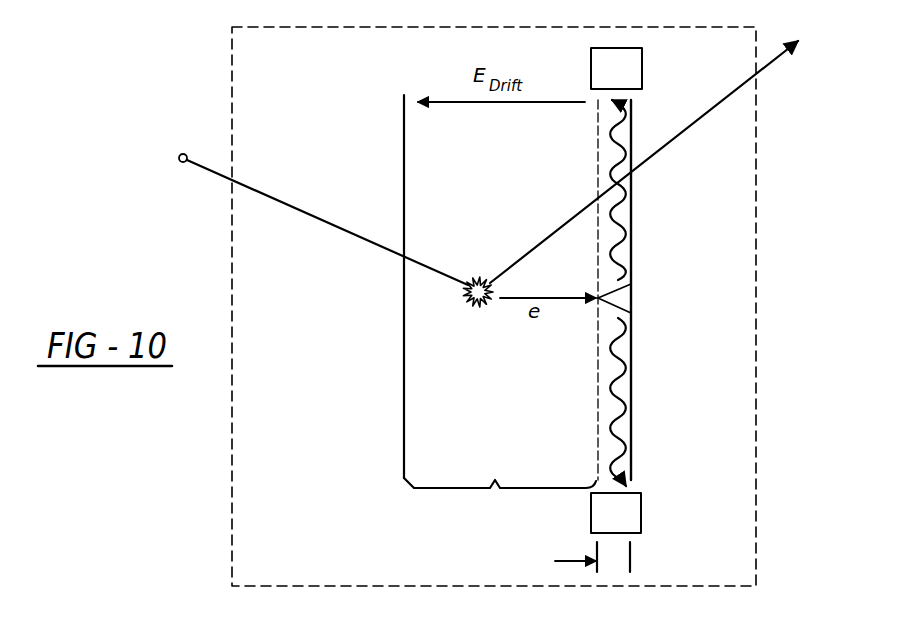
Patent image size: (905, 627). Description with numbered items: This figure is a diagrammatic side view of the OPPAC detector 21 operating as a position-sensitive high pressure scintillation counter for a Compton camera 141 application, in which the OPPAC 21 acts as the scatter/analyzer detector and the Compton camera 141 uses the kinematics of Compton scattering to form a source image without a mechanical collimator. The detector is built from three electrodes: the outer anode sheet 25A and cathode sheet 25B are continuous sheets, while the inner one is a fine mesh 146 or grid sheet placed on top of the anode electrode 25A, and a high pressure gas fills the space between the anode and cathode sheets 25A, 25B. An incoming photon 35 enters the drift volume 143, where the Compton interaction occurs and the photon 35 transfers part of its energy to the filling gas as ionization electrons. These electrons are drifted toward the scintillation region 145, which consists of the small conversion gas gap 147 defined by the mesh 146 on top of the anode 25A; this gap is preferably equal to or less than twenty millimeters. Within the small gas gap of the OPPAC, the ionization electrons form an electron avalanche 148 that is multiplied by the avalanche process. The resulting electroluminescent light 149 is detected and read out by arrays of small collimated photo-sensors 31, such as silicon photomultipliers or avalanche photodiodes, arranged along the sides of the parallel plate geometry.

The OPPAC detector 21 is at (334, 448).
The anode electrode 25A is at (631, 380).
The cathode sheet 25B is at (404, 184).
The photo-detectors 31 is at (630, 70).
The photon 35 is at (183, 154).
The Compton camera 141 is at (756, 273).
The drift volume 143 is at (500, 501).
The scintillation region 145 is at (607, 160).
The fine mesh 146 is at (598, 350).
The conversion gas gap 147 is at (632, 561).
The electron avalanche 148 is at (631, 300).
The electroluminescent light 149 is at (631, 221).